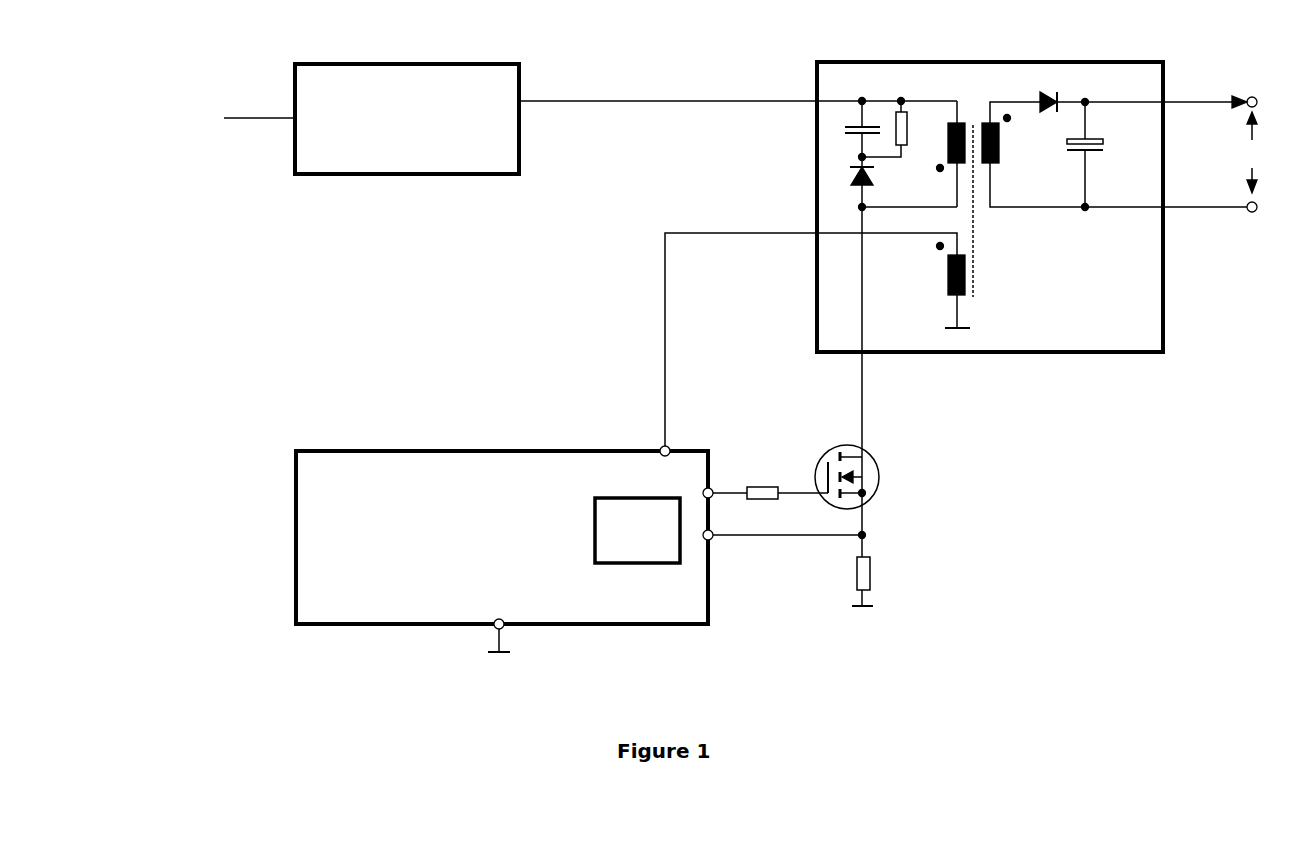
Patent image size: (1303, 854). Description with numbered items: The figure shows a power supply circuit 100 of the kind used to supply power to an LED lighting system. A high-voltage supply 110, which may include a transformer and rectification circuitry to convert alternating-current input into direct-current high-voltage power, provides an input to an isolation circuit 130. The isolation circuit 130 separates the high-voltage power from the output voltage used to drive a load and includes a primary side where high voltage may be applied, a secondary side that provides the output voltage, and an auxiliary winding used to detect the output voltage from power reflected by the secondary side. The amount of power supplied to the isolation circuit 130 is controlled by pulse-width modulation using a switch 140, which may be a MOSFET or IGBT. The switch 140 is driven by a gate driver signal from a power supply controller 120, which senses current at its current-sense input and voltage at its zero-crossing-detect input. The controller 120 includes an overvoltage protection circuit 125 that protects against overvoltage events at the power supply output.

The power supply circuit 100 is at (1169, 565).
The high-voltage supply 110 is at (407, 105).
The power supply controller 120 is at (514, 538).
The overvoltage protection (OVP) circuit 125 is at (637, 517).
The isolation circuit 130 is at (990, 285).
The switch 140 is at (874, 477).